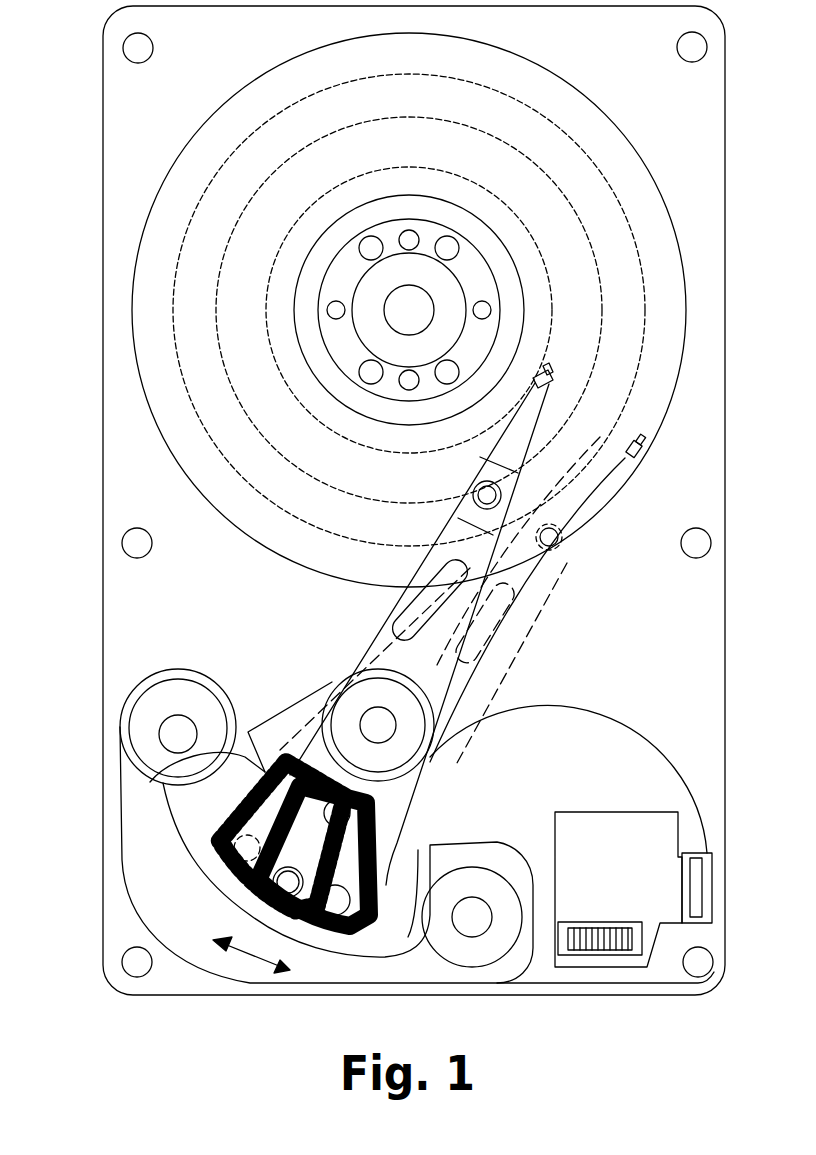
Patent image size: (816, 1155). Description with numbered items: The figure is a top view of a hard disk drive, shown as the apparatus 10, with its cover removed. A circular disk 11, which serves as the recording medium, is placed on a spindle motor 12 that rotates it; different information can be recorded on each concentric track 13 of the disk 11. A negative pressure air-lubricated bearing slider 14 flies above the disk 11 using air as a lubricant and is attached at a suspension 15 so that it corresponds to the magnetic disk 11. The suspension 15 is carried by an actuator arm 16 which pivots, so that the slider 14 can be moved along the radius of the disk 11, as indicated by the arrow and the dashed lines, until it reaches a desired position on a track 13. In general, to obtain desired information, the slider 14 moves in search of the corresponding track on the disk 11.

The apparatus 10 is at (118, 421).
The disk 11 is at (158, 197).
The spindle motor 12 is at (360, 338).
The track 13 is at (224, 272).
The slider 14 is at (552, 374).
The suspension 15 is at (521, 437).
The actuator arm 16 is at (383, 632).